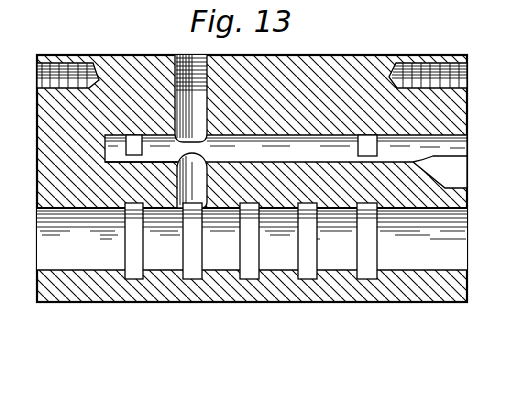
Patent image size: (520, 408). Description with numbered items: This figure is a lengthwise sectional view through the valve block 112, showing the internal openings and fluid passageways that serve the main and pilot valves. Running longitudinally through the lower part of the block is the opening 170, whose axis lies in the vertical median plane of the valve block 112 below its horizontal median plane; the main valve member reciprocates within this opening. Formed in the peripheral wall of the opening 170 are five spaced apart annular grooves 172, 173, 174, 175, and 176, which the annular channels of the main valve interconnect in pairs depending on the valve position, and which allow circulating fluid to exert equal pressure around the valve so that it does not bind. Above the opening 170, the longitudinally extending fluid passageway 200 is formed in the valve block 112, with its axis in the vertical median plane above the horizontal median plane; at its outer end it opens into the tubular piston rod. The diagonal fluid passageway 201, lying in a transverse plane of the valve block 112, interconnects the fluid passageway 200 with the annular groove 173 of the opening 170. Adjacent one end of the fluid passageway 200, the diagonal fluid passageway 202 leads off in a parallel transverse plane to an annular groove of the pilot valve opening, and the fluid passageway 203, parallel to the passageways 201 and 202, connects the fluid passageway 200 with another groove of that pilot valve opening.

The valve block 112 is at (250, 72).
The opening 170 is at (452, 256).
The annular groove 172 is at (130, 272).
The annular groove 173 is at (190, 271).
The annular groove 174 is at (248, 272).
The annular groove 175 is at (306, 277).
The annular groove 176 is at (369, 272).
The fluid passageway 200 is at (295, 147).
The diagonal fluid passageway 201 is at (197, 173).
The diagonal fluid passageway 202 is at (141, 138).
The fluid passageway 203 is at (368, 137).